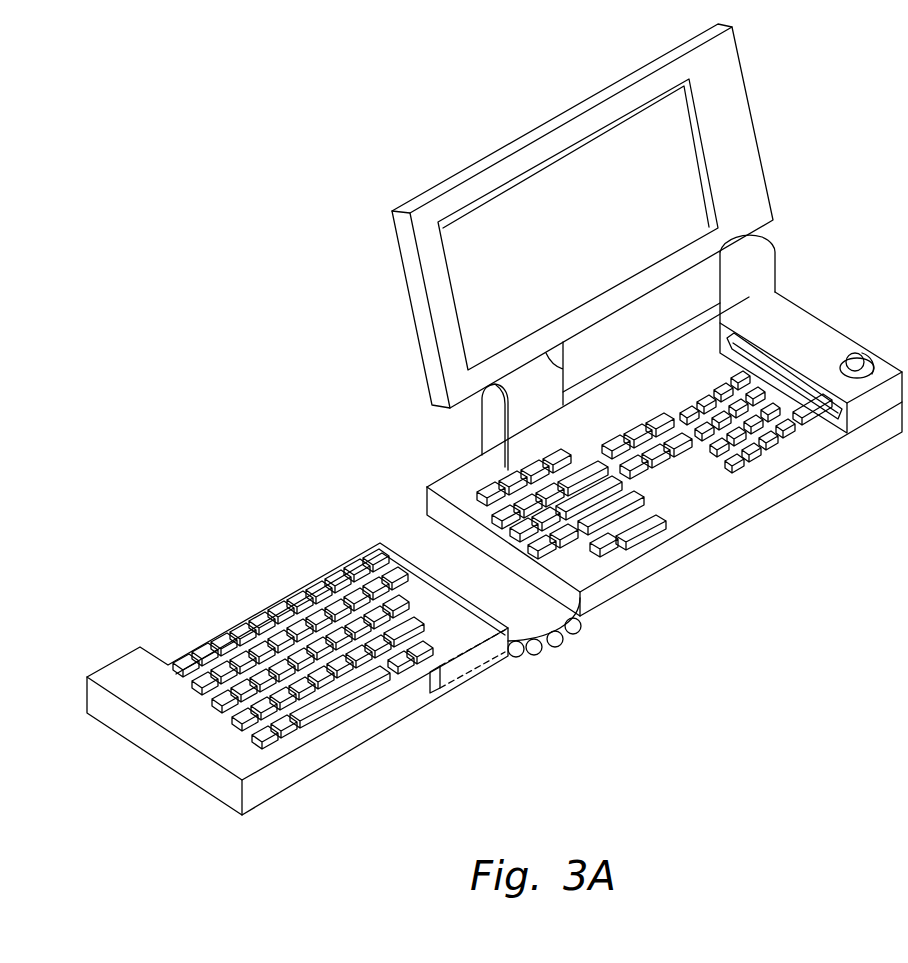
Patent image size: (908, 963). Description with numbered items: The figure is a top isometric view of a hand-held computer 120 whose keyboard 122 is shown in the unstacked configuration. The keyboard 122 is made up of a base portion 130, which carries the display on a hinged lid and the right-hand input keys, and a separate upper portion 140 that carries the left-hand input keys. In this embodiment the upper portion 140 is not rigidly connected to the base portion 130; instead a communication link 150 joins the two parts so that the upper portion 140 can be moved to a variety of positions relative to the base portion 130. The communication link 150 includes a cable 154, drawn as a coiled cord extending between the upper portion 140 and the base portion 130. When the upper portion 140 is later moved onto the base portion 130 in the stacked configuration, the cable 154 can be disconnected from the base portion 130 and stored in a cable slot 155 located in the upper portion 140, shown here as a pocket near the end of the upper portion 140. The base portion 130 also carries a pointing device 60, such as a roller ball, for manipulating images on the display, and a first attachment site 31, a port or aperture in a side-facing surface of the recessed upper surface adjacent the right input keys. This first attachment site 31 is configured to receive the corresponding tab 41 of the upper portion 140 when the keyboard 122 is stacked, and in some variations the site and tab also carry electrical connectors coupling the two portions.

The hand-held computer 120 is at (847, 248).
The base portion 130 is at (805, 498).
The keyboard 122 is at (787, 562).
The first attachment site 31 is at (800, 386).
The pointing device 60 is at (859, 358).
The tab 41 is at (410, 562).
The upper portion 140 is at (328, 770).
The communication link 150 is at (605, 646).
The cable 154 is at (594, 637).
The cable slot 155 is at (492, 682).